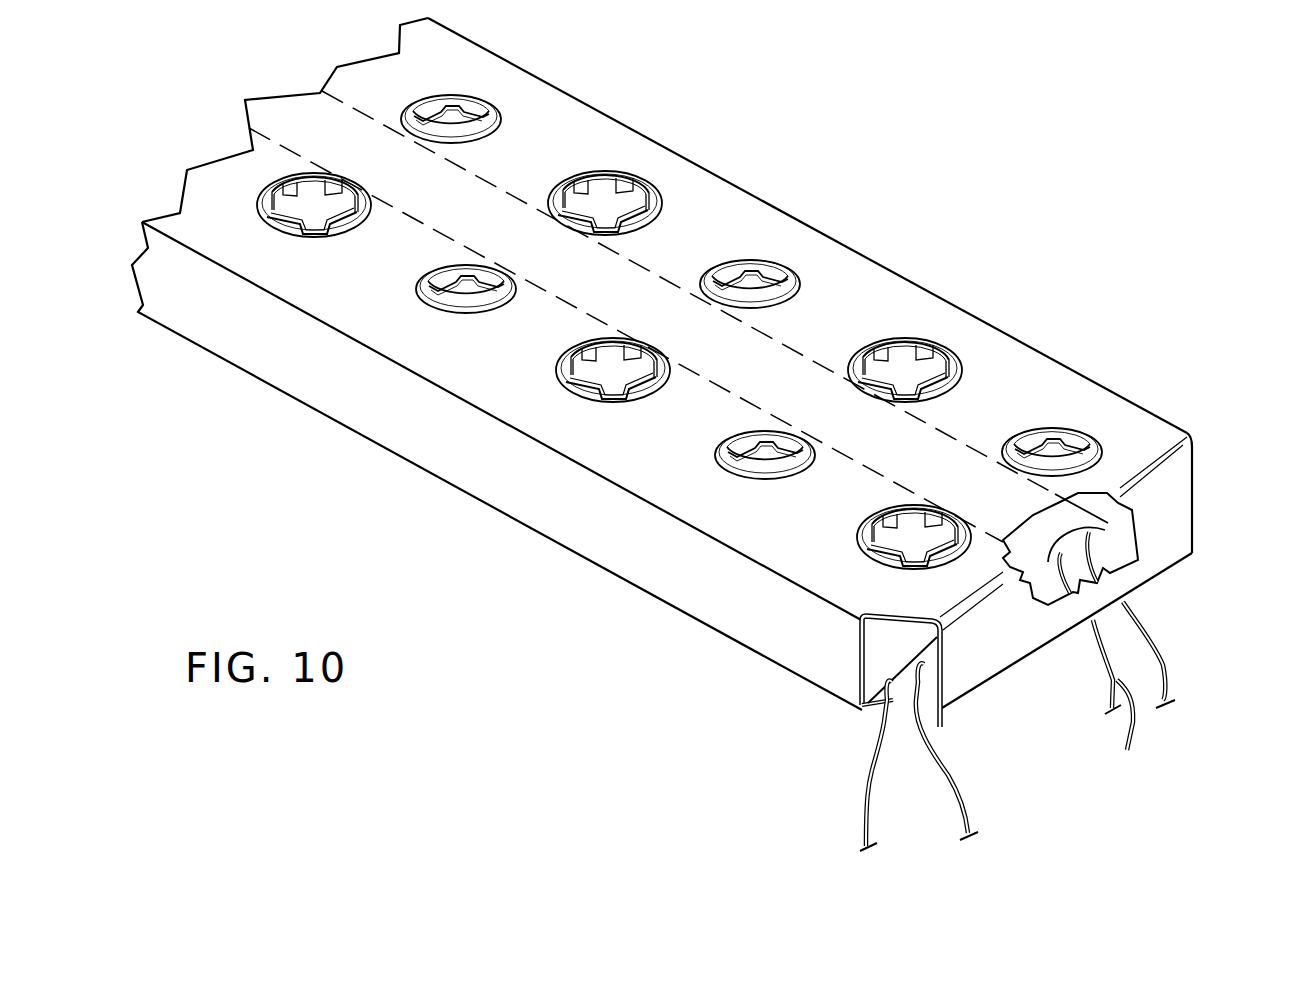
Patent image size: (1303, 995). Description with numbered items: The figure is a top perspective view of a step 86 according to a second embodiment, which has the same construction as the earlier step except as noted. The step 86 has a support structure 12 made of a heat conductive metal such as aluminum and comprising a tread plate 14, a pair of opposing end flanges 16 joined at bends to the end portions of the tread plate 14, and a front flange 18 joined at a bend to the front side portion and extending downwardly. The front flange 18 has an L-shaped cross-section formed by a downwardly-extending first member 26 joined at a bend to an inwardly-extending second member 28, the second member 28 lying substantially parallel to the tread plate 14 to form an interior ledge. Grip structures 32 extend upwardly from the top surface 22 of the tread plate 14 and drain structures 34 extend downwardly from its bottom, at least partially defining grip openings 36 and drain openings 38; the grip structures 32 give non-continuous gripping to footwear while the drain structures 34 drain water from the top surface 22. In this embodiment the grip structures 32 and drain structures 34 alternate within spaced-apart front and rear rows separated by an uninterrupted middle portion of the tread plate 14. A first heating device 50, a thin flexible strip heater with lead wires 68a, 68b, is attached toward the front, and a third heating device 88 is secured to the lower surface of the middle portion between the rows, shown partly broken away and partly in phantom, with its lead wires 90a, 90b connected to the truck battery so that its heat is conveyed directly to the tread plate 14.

The support structure 12 is at (830, 235).
The tread plate 14 is at (890, 307).
The end flanges 16 is at (998, 645).
The front flange 18 is at (683, 568).
The top surface 22 is at (733, 215).
The first member 26 is at (847, 663).
The second member 28 is at (885, 750).
The grip structures 32 is at (947, 347).
The drain structures 34 is at (803, 277).
The grip openings 36 is at (905, 370).
The drain openings 38 is at (1052, 457).
The first heating device 50 is at (893, 650).
The lead wire 68a is at (858, 810).
The lead wire 68b is at (965, 793).
The step 86 is at (680, 128).
The third heating device 88 is at (1050, 556).
The lead wire 90a is at (1128, 745).
The lead wire 90b is at (1165, 658).